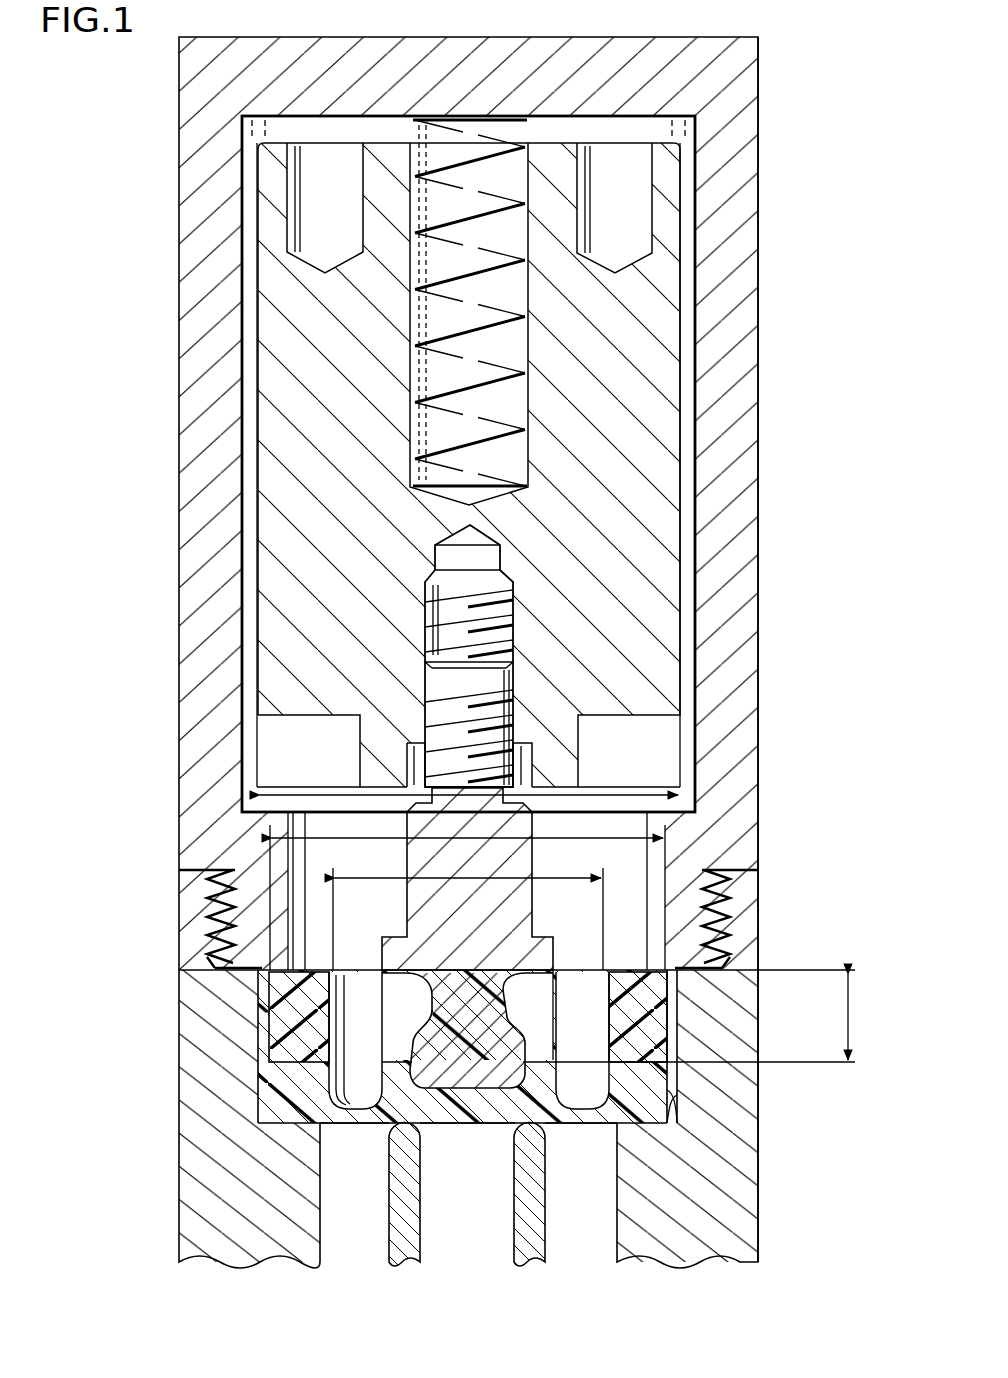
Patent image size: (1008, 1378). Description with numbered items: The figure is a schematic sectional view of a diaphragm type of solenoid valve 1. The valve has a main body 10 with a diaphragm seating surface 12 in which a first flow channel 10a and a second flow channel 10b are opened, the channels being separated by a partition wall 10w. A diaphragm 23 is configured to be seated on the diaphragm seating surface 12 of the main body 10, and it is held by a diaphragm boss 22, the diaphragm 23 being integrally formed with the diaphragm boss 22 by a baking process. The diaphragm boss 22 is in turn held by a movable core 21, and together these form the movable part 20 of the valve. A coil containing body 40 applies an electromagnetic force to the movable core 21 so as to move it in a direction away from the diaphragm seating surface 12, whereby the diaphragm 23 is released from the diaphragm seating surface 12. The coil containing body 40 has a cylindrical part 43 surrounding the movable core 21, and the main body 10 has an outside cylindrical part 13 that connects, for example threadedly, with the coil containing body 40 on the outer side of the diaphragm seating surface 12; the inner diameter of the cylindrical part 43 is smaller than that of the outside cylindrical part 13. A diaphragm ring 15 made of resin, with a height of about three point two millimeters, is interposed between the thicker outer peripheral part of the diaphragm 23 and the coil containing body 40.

The diaphragm type of solenoid valve 1 is at (128, 689).
The main body 10 is at (774, 1209).
The first flow channel 10a is at (491, 1222).
The second flow channel 10b is at (381, 1222).
The partition wall 10w is at (405, 1262).
The diaphragm seating surface 12 is at (675, 1095).
The outside cylindrical part 13 is at (735, 1043).
The diaphragm ring 15 is at (642, 1012).
The movable part 20 is at (552, 897).
The movable core 21 is at (312, 716).
The diaphragm boss 22 is at (533, 852).
The diaphragm 23 is at (382, 950).
The coil containing body 40 is at (174, 838).
The cylindrical part 43 is at (762, 772).